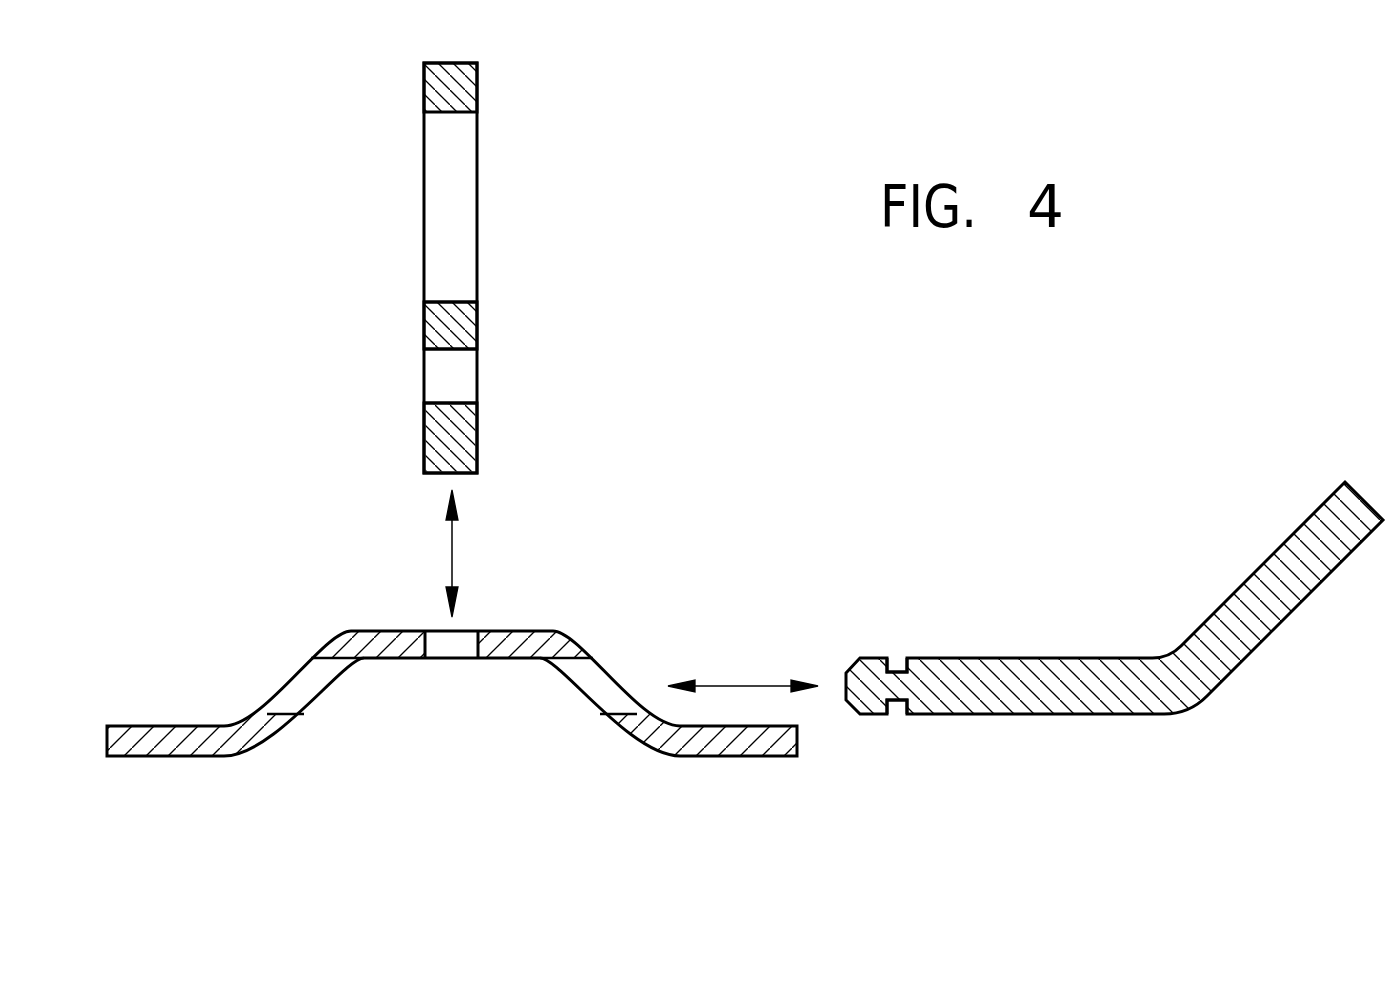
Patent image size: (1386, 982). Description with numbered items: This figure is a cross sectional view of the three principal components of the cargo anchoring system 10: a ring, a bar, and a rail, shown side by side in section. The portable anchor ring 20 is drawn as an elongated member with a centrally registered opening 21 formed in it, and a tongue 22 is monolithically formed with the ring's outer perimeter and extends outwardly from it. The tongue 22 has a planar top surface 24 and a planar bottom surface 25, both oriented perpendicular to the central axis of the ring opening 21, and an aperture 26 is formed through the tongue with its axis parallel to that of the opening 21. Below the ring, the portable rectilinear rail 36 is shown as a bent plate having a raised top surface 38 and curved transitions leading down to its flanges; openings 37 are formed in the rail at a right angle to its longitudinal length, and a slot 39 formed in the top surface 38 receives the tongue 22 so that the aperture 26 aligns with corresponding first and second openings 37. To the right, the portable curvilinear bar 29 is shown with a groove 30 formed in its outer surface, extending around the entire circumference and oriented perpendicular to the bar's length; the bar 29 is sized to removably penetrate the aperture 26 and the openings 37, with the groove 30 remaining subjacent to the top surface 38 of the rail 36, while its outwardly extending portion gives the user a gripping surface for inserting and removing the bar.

The system 10 is at (691, 283).
The portable anchor ring 20 is at (472, 91).
The centrally registered opening 21 is at (456, 268).
The tongue 22 is at (456, 411).
The planar top surface 24 is at (481, 421).
The planar bottom surface 25 is at (398, 435).
The aperture 26 is at (453, 380).
The portable curvilinear bar 29 is at (1114, 598).
The groove 30 is at (893, 670).
The portable rectilinear rail 36 is at (455, 618).
The opening 37 is at (300, 690).
The top surface 38 is at (389, 630).
The slot 39 is at (447, 665).